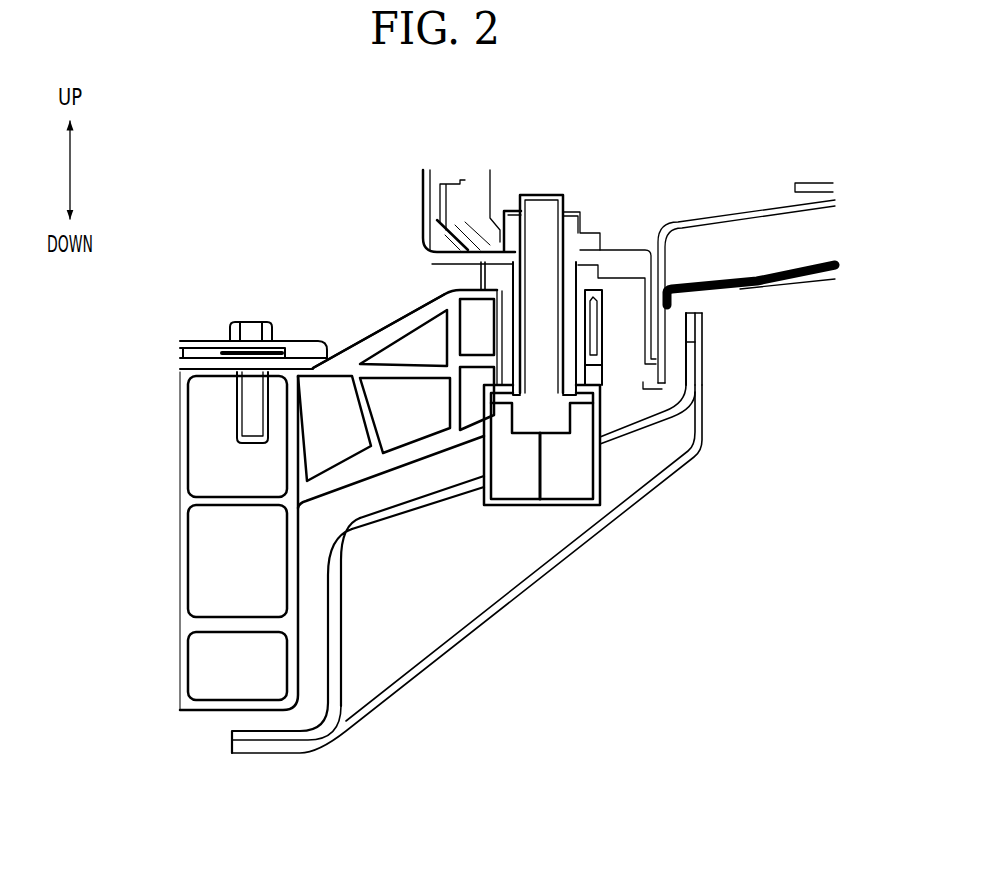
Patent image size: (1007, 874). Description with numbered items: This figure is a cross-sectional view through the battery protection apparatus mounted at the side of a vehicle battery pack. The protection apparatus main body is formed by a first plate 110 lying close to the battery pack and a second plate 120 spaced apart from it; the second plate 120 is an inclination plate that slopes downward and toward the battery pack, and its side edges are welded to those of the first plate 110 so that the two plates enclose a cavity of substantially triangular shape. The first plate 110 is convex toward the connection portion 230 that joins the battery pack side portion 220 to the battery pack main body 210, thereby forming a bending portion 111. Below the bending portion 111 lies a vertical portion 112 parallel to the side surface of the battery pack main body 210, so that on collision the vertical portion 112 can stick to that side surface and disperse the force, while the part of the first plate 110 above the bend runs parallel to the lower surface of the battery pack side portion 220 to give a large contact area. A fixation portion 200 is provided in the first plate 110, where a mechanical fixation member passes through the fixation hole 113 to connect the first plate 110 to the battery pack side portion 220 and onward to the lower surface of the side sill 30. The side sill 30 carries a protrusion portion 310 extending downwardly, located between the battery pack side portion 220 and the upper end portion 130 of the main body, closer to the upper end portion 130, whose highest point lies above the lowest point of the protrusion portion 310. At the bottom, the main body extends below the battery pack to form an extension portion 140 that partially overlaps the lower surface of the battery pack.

The side sill 30 is at (732, 276).
The first plate 110 is at (427, 503).
The bending portion 111 is at (352, 541).
The vertical portion 112 is at (325, 634).
The fixation hole 113 is at (566, 487).
The second plate 120 is at (663, 487).
The upper end portion 130 is at (706, 356).
The extension portion 140 is at (291, 746).
The fixation portion 200 is at (600, 463).
The battery pack main body 210 is at (180, 510).
The battery pack side portion 220 is at (338, 356).
The connection portion 230 is at (304, 495).
The protrusion portion 310 is at (674, 375).